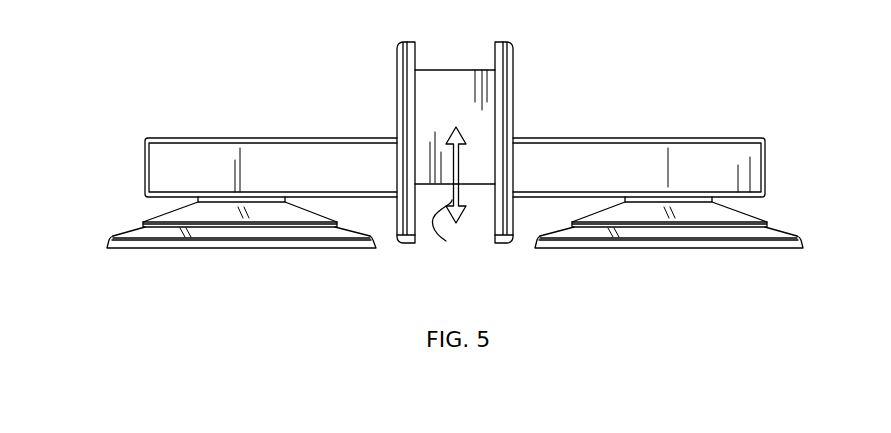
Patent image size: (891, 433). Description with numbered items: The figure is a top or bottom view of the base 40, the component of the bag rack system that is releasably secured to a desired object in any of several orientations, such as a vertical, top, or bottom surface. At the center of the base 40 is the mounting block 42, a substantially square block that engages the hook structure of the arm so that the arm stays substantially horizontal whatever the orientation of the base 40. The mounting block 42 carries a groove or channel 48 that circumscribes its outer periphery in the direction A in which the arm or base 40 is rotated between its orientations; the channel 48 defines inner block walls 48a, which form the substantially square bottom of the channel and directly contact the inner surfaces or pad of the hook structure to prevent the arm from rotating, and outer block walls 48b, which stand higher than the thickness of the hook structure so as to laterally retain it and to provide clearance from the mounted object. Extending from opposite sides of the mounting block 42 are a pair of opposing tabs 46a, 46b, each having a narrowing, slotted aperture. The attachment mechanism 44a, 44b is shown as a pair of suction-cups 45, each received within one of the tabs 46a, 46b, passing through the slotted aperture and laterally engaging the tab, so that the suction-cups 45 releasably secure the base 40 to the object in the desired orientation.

The base 40 is at (770, 85).
The mounting block 42 is at (418, 262).
The attachment mechanism 44a is at (670, 253).
The attachment mechanism 44b is at (237, 265).
The suction-cup 45 is at (153, 248).
The tab 46a is at (758, 172).
The tab 46b is at (147, 168).
The channel 48 is at (463, 247).
The inner block walls 48a is at (437, 90).
The outer block walls 48b is at (407, 62).